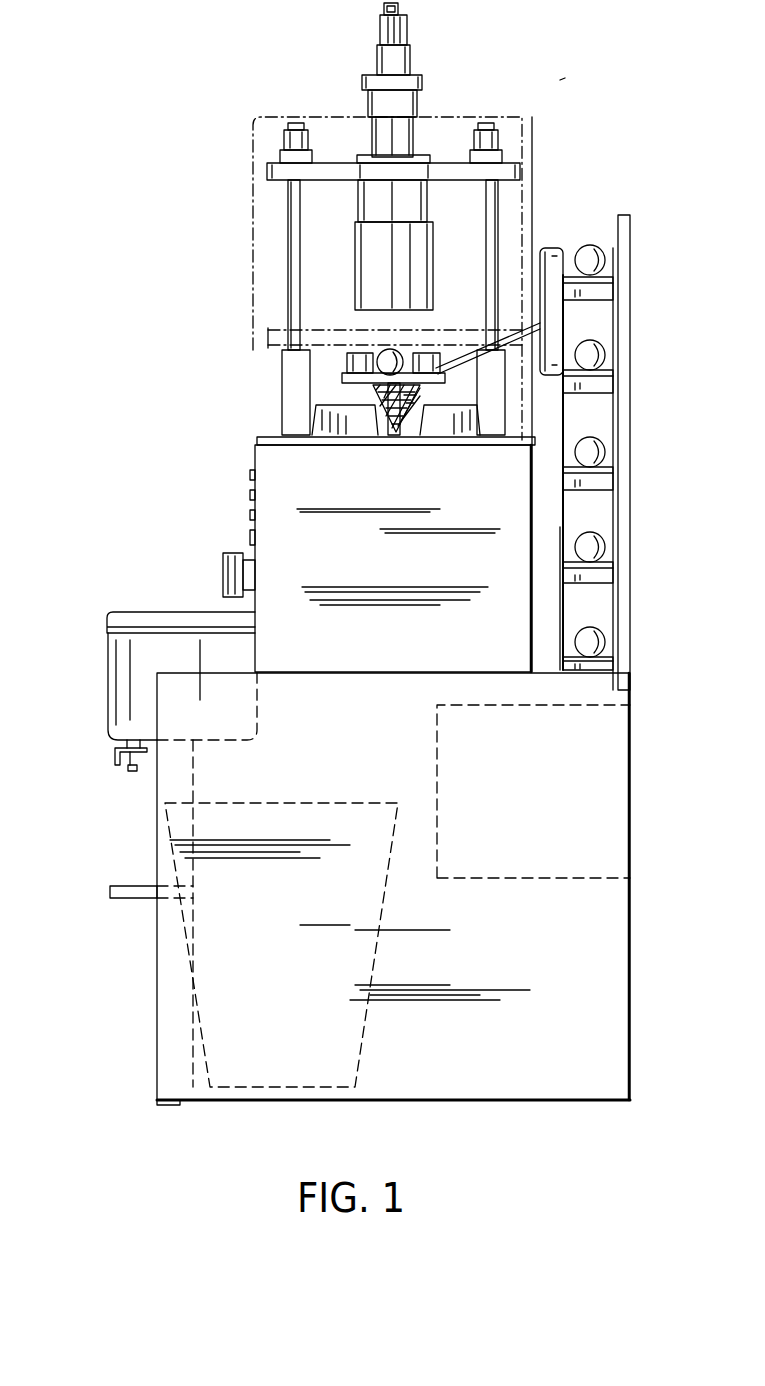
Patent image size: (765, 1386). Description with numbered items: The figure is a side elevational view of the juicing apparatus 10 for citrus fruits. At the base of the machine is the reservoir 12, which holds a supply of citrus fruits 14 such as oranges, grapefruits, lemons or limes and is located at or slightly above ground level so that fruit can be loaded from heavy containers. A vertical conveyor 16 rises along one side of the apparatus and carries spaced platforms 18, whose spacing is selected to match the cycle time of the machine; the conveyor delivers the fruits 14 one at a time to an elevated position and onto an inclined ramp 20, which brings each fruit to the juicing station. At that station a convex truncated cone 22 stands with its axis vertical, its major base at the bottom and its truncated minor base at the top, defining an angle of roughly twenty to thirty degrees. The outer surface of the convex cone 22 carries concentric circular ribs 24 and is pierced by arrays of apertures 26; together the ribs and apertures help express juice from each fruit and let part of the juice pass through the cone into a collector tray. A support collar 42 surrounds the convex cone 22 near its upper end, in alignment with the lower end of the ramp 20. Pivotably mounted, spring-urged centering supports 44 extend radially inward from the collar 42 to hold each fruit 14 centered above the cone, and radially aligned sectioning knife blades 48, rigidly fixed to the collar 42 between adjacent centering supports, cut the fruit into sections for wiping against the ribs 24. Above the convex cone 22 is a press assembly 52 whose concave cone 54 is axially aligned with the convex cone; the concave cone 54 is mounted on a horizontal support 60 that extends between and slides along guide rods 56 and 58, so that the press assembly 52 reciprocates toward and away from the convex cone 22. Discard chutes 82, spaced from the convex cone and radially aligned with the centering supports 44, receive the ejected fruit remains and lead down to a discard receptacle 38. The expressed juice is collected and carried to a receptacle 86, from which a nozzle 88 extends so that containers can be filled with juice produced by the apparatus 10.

The juicing apparatus 10 is at (577, 74).
The reservoir 12 is at (608, 807).
The citrus fruits 14 is at (388, 358).
The vertical conveyor 16 is at (633, 428).
The platforms 18 is at (608, 388).
The inclined ramp 20 is at (518, 327).
The convex truncated cone 22 is at (373, 395).
The circular ribs 24 is at (388, 410).
The apertures 26 is at (402, 405).
The discard receptacle 38 is at (205, 1047).
The support collar 42 is at (341, 379).
The centering supports 44 is at (347, 360).
The sectioning knife blades 48 is at (394, 365).
The press assembly 52 is at (372, 260).
The concave cone 54 is at (378, 59).
The guide rod 56 is at (500, 212).
The guide rod 58 is at (290, 208).
The horizontal support 60 is at (267, 170).
The discard chutes 82 is at (347, 430).
The receptacle 86 is at (110, 680).
The nozzle 88 is at (113, 757).